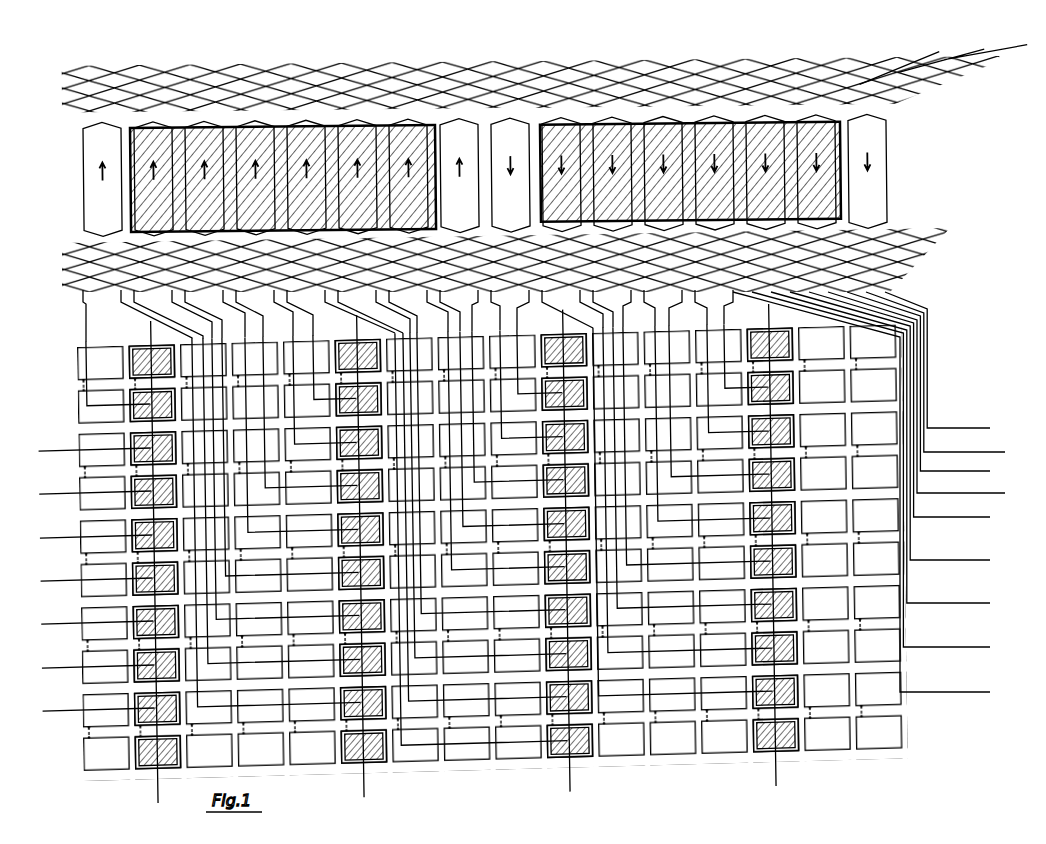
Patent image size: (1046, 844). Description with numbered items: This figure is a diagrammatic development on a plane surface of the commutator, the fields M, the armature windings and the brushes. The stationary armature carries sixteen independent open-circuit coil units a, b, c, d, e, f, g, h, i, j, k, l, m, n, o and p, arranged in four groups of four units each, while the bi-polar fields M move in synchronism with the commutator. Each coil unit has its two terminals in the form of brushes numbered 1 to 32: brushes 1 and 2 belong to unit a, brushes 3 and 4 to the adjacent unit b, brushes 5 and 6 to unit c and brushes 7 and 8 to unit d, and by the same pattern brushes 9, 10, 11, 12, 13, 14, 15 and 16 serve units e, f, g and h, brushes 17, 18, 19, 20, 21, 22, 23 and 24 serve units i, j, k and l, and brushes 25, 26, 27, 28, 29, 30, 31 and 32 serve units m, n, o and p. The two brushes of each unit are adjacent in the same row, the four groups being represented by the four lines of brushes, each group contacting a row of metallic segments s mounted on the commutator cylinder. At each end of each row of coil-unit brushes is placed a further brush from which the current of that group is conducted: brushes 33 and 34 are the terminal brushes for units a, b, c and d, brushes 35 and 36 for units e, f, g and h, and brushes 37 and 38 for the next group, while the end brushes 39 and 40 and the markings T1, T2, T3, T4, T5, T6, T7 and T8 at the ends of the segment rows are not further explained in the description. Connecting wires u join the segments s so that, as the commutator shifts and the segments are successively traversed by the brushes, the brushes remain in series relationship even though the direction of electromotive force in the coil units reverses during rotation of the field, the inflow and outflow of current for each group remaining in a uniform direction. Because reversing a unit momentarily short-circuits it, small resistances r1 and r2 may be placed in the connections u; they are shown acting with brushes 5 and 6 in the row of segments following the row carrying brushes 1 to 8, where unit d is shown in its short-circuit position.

The brush 1 is at (352, 701).
The brush 2 is at (348, 660).
The brush 3 is at (347, 617).
The brush 4 is at (346, 573).
The brush 5 is at (346, 530).
The brush 6 is at (345, 487).
The brush 7 is at (344, 443).
The brush 8 is at (344, 400).
The brush 9 is at (554, 698).
The brush 10 is at (551, 654).
The brush 11 is at (550, 611).
The brush 12 is at (549, 568).
The brush 13 is at (549, 524).
The brush 14 is at (548, 481).
The brush 15 is at (547, 437).
The brush 16 is at (547, 394).
The brush 17 is at (789, 691).
The brush 18 is at (788, 648).
The brush 19 is at (787, 605).
The brush 20 is at (787, 561).
The brush 21 is at (786, 518).
The brush 22 is at (785, 474).
The brush 23 is at (784, 431).
The brush 24 is at (784, 388).
The brush 25 is at (139, 709).
The brush 26 is at (139, 666).
The brush 27 is at (138, 622).
The brush 28 is at (137, 579).
The brush 29 is at (137, 536).
The brush 30 is at (136, 492).
The brush 31 is at (135, 449).
The brush 32 is at (135, 405).
The terminal brush 33 is at (346, 747).
The terminal brush 34 is at (340, 356).
The terminal brush 35 is at (589, 740).
The terminal brush 36 is at (566, 338).
The terminal brush 37 is at (776, 751).
The terminal brush 38 is at (773, 332).
The winding element 39 is at (148, 766).
The winding element 40 is at (134, 362).
The terminal T1 is at (373, 786).
The terminal T2 is at (341, 325).
The terminal T3 is at (579, 781).
The terminal T4 is at (547, 320).
The terminal T5 is at (785, 775).
The terminal T6 is at (753, 314).
The terminal T7 is at (167, 792).
The terminal T8 is at (135, 331).
The field M is at (148, 182).
The resistance r1 is at (1008, 492).
The resistance r2 is at (1005, 452).
The connecting wire u is at (432, 728).
The segment s is at (515, 745).
The coil unit a is at (488, 170).
The coil unit b is at (508, 159).
The coil unit c is at (536, 146).
The coil unit d is at (293, 52).
The coil unit e is at (339, 52).
The coil unit f is at (387, 52).
The coil unit g is at (444, 52).
The coil unit h is at (496, 52).
The coil unit i is at (539, 52).
The coil unit j is at (587, 52).
The coil unit k is at (640, 52).
The coil unit l is at (692, 52).
The coil unit m is at (40, 108).
The coil unit n is at (50, 95).
The coil unit o is at (40, 82).
The coil unit p is at (55, 70).